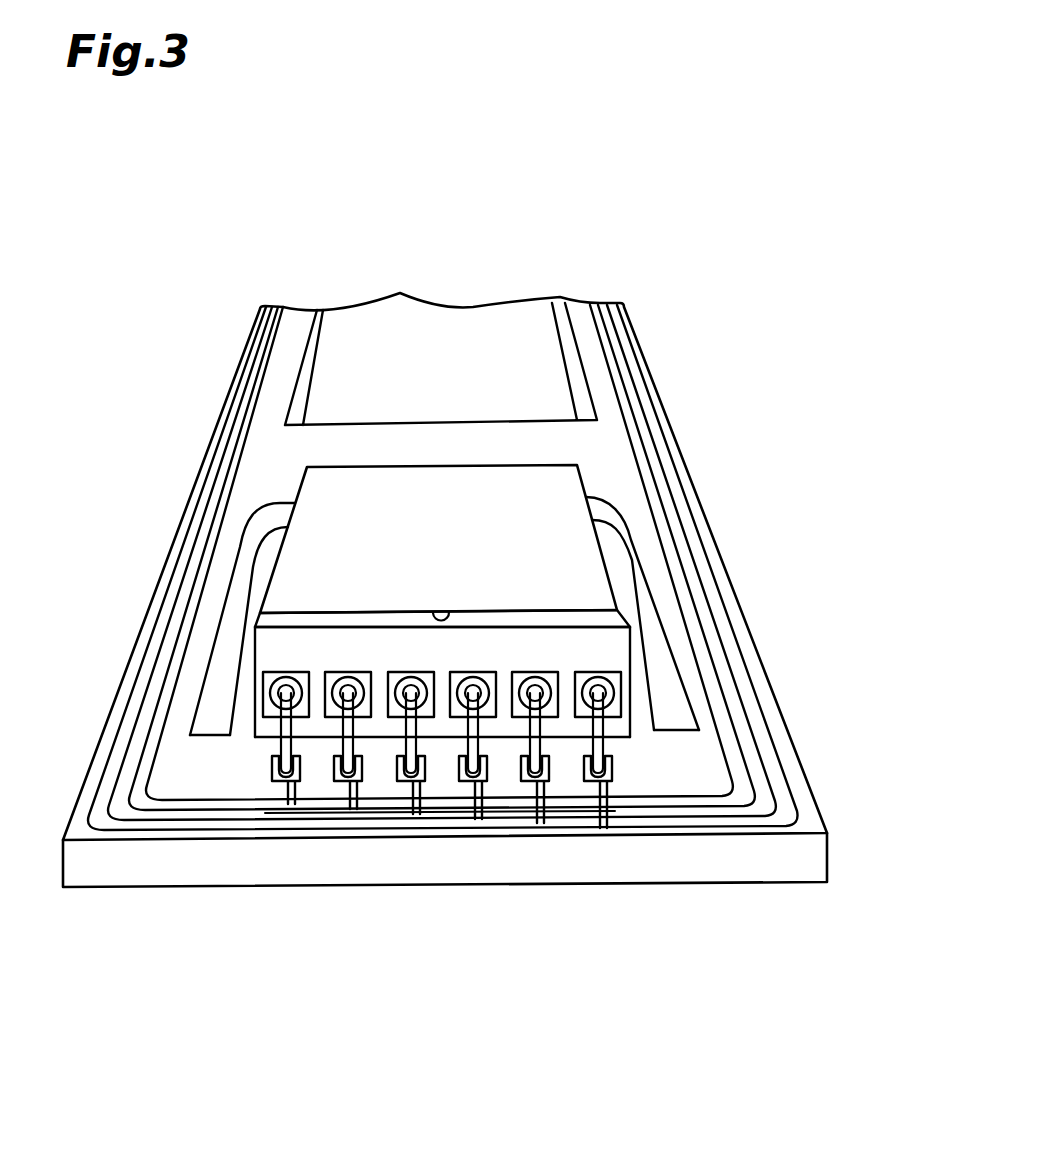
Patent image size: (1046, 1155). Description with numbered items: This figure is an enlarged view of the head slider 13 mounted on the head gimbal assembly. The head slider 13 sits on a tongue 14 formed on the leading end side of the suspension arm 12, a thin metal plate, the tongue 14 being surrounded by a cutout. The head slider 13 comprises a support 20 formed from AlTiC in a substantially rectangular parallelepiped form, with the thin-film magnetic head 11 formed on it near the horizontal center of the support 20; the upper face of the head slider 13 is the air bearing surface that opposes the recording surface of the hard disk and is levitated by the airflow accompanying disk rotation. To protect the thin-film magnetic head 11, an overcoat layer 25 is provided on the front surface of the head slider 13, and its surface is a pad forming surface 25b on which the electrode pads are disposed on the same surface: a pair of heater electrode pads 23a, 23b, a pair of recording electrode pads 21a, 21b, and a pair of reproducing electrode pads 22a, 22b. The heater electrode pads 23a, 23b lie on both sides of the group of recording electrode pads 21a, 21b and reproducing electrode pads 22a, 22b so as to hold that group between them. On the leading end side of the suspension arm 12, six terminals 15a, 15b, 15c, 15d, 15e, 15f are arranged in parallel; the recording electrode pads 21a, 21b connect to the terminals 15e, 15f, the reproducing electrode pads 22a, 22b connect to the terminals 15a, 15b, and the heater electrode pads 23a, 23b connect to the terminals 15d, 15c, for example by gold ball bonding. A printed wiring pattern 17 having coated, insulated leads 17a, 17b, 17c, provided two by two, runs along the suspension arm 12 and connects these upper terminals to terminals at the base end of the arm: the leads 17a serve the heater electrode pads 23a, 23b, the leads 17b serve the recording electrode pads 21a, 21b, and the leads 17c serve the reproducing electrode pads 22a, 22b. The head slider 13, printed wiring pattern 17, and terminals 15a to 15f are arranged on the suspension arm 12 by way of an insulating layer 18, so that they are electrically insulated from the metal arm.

The thin-film magnetic head 11 is at (444, 611).
The suspension arm 12 is at (750, 863).
The head slider 13 is at (437, 462).
The tongue 14 is at (650, 710).
The terminal 15a is at (470, 790).
The terminal 15b is at (543, 783).
The terminal 15c is at (620, 800).
The terminal 15d is at (292, 785).
The terminal 15e is at (350, 783).
The terminal 15f is at (412, 785).
The printed wiring pattern 17 is at (128, 700).
The lead 17a is at (288, 305).
The lead 17b is at (278, 305).
The lead 17c is at (603, 300).
The insulating layer 18 is at (247, 730).
The support 20 is at (585, 481).
The recording electrode pad 21a is at (341, 673).
The recording electrode pad 21b is at (410, 673).
The reproducing electrode pad 22a is at (470, 673).
The reproducing electrode pad 22b is at (535, 673).
The heater electrode pad 23a is at (280, 673).
The heater electrode pad 23b is at (633, 728).
The overcoat layer 25 is at (545, 617).
The spacer upper surface 25b is at (613, 637).